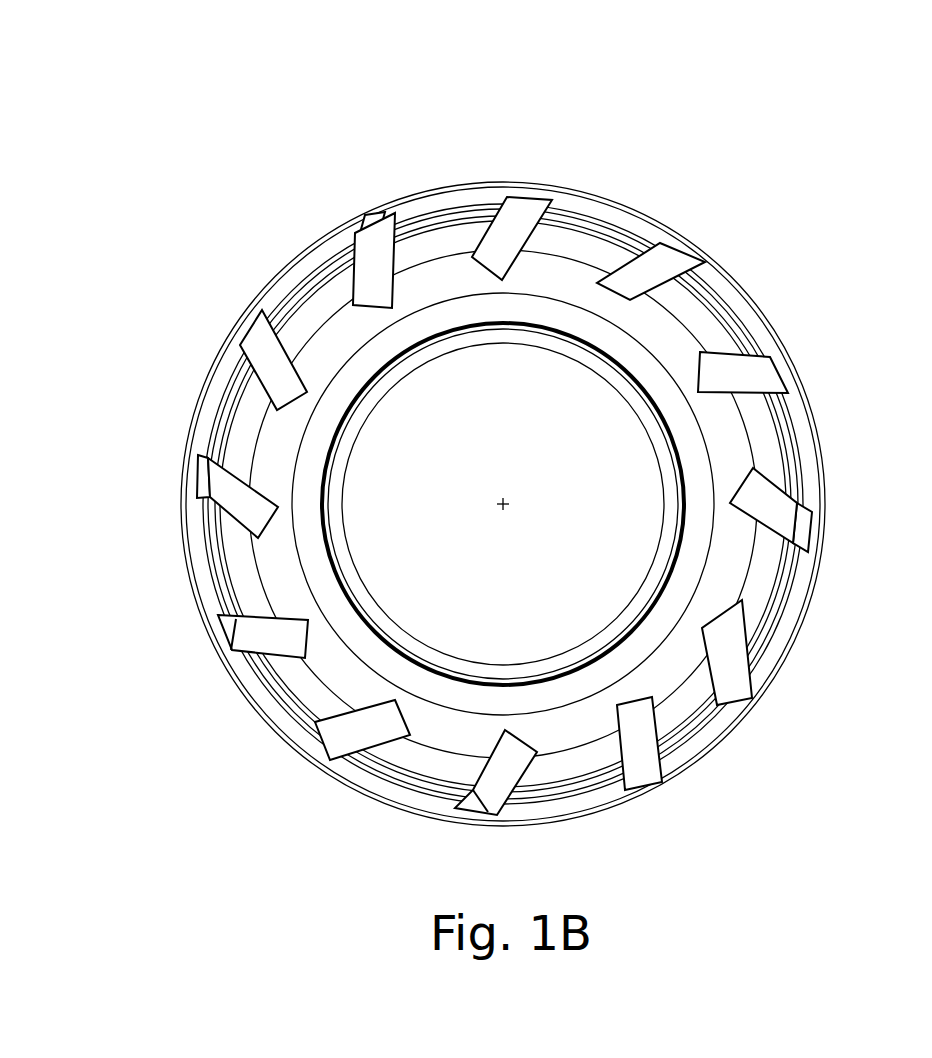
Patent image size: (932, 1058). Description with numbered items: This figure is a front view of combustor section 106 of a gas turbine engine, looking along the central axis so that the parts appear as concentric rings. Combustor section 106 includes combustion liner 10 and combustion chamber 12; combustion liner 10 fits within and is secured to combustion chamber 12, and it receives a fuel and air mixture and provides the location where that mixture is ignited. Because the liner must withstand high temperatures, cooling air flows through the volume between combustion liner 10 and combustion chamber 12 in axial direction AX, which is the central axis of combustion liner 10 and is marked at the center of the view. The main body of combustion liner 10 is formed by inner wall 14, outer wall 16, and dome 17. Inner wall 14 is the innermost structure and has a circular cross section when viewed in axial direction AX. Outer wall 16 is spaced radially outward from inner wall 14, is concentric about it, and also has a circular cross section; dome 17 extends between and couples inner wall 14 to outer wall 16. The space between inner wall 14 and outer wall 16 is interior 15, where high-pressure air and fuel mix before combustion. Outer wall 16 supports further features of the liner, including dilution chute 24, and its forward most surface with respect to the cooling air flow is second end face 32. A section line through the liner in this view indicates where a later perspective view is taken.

The combustor section 106 is at (504, 433).
The combustion liner 10 is at (340, 250).
The combustion chamber 12 is at (228, 330).
The inner wall 14 is at (325, 546).
The interior 15 is at (573, 276).
The outer wall 16 is at (231, 393).
The dome 17 is at (660, 327).
The dilution chute 24 is at (742, 372).
The second end face 32 is at (790, 448).
The axial direction AX is at (503, 504).